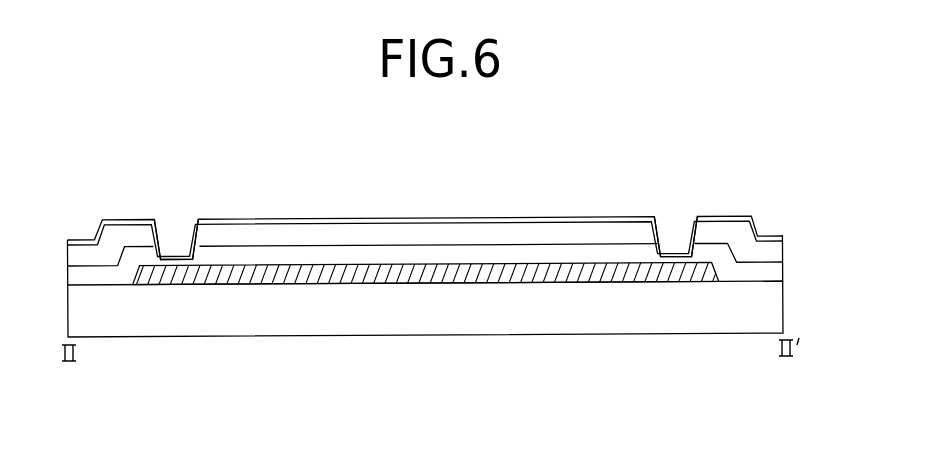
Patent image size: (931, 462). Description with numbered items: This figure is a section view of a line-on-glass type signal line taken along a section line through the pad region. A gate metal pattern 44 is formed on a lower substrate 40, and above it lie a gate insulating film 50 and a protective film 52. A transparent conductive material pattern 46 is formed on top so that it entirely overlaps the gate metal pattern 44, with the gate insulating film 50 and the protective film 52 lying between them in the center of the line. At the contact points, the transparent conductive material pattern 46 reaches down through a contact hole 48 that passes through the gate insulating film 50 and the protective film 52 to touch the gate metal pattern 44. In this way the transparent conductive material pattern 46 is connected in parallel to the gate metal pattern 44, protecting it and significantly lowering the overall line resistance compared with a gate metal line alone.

The lower substrate 40 is at (778, 317).
The gate metal pattern 44 is at (450, 275).
The transparent conductive material pattern 46 is at (783, 235).
The contact hole 48 is at (173, 242).
The gate insulating film 50 is at (778, 275).
The protective film 52 is at (778, 248).